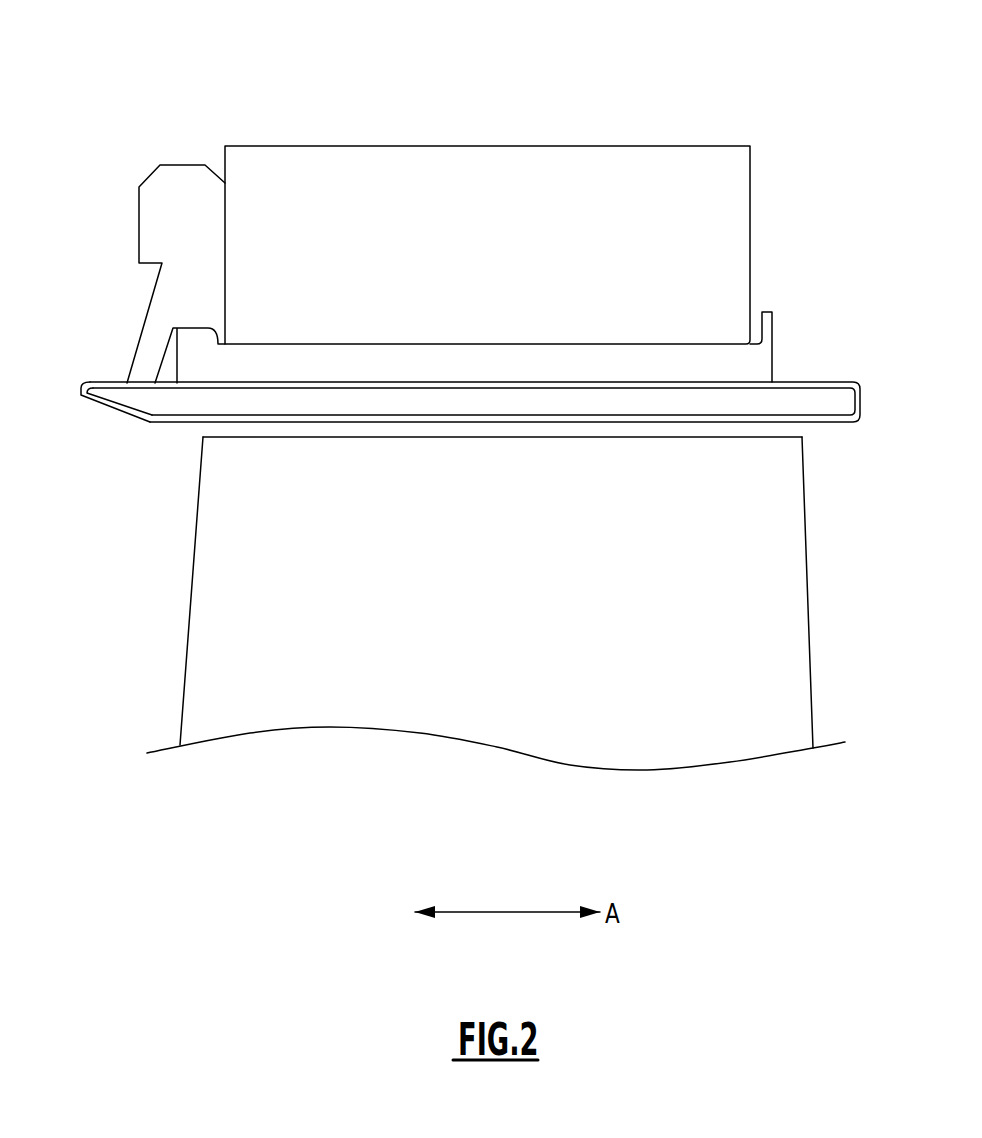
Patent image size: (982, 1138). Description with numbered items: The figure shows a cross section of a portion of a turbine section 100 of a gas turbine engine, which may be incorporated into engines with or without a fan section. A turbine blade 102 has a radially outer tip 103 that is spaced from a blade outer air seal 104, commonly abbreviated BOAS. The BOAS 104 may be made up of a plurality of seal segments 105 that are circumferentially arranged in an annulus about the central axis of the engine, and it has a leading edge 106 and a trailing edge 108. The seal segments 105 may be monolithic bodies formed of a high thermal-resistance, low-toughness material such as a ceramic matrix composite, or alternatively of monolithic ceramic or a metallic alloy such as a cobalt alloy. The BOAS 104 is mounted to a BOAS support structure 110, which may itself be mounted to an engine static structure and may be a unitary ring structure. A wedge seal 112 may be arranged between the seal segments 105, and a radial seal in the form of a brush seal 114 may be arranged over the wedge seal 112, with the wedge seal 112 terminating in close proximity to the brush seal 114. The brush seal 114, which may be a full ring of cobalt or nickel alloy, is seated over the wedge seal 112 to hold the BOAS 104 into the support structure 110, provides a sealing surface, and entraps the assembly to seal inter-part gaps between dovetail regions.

The turbine section 100 is at (146, 77).
The turbine blade 102 is at (532, 647).
The radially outer tip 103 is at (785, 437).
The blade outer air seal 104 is at (837, 405).
The seal segments 105 is at (172, 403).
The leading edge 106 is at (78, 392).
The trailing edge 108 is at (860, 382).
The BOAS support structure 110 is at (433, 177).
The wedge seal 112 is at (757, 362).
The brush seal 114 is at (172, 293).